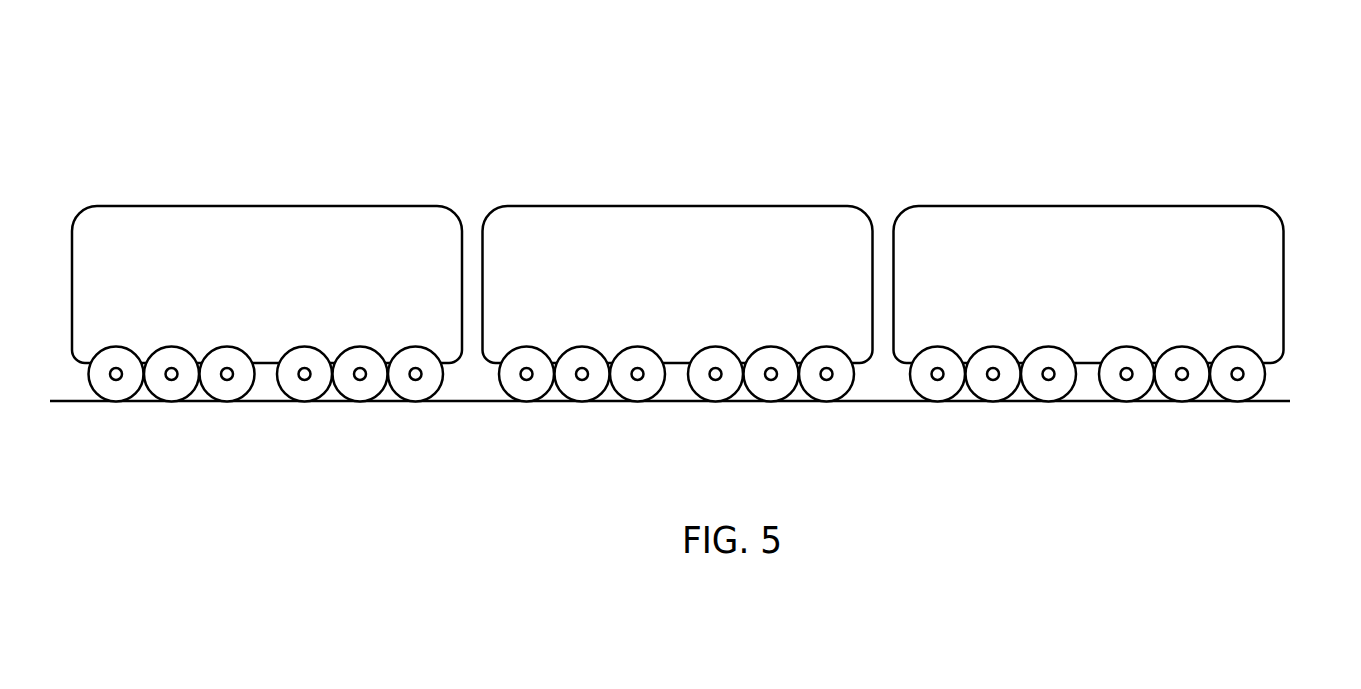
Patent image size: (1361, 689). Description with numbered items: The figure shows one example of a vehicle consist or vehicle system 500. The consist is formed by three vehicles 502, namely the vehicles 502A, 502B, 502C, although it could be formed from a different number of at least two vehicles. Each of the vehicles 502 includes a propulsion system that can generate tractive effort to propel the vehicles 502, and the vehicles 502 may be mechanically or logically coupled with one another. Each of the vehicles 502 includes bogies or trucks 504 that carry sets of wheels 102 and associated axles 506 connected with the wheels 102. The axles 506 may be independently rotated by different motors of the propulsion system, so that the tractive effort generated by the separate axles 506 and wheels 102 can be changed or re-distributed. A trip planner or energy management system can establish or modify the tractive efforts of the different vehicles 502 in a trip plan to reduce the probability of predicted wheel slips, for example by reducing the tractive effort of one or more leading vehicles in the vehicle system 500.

The vehicle system 500 is at (1242, 85).
The vehicles 502 is at (118, 170).
The vehicle 502A is at (266, 206).
The vehicle 502B is at (676, 206).
The vehicle 502C is at (1087, 206).
The bogie 504 is at (258, 429).
The axles 506 is at (932, 379).
The wheels 102 is at (495, 387).